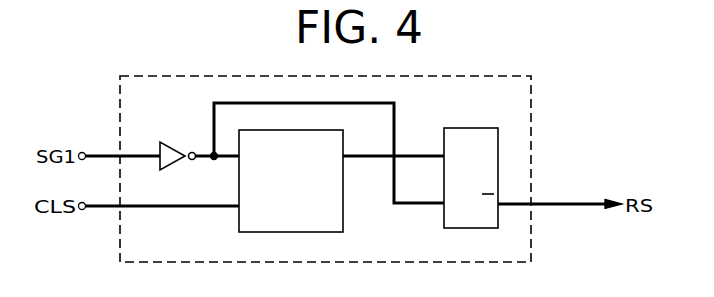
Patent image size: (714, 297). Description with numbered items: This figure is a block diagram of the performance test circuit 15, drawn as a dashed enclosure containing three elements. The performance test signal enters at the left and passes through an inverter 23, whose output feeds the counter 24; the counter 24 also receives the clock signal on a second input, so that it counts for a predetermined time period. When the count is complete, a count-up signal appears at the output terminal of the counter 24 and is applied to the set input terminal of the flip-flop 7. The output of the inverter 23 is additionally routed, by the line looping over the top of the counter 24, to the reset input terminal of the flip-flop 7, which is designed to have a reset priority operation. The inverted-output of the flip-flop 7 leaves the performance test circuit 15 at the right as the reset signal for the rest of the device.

The performance test circuit 15 is at (531, 245).
The inverter 23 is at (170, 141).
The counter 24 is at (333, 232).
The flip-flop FF7 7 is at (473, 126).